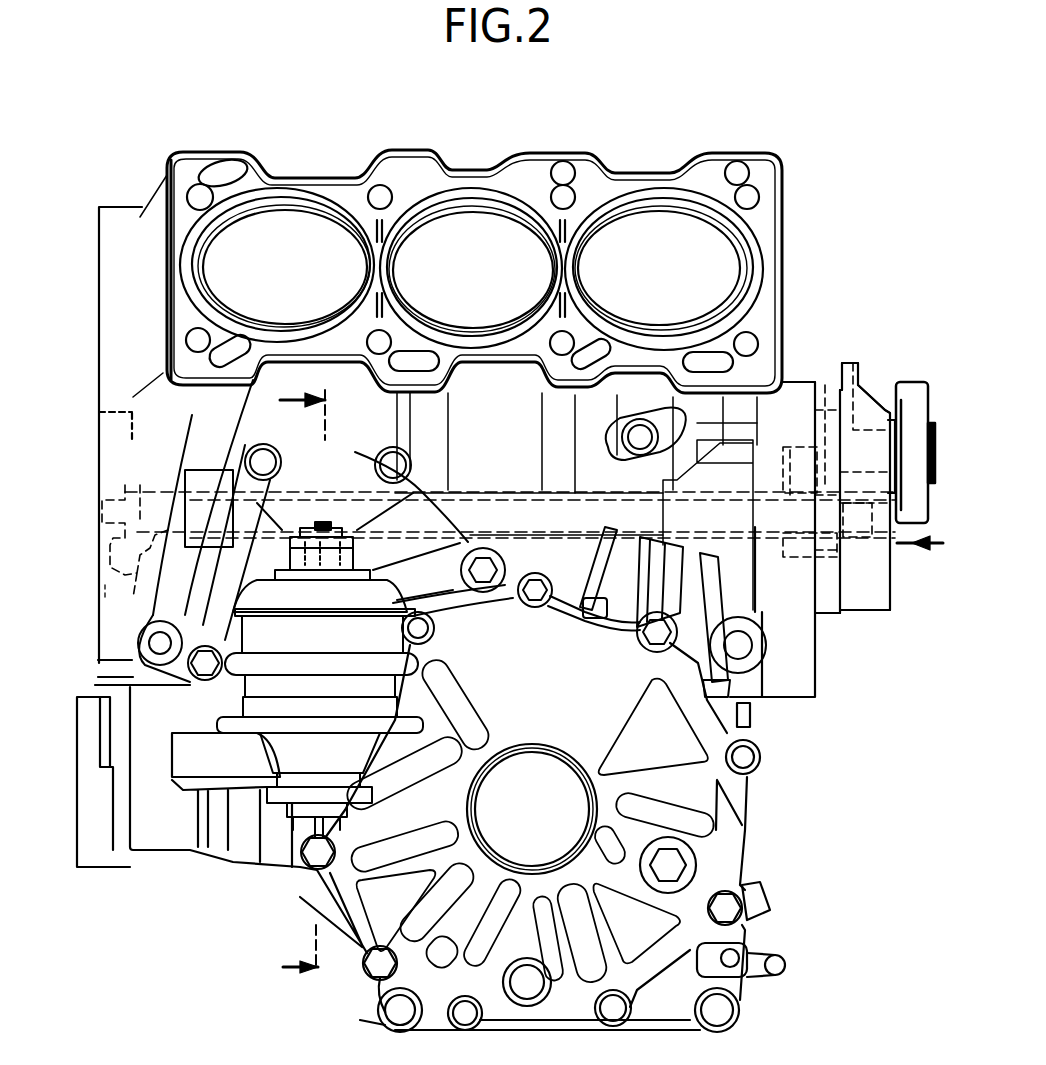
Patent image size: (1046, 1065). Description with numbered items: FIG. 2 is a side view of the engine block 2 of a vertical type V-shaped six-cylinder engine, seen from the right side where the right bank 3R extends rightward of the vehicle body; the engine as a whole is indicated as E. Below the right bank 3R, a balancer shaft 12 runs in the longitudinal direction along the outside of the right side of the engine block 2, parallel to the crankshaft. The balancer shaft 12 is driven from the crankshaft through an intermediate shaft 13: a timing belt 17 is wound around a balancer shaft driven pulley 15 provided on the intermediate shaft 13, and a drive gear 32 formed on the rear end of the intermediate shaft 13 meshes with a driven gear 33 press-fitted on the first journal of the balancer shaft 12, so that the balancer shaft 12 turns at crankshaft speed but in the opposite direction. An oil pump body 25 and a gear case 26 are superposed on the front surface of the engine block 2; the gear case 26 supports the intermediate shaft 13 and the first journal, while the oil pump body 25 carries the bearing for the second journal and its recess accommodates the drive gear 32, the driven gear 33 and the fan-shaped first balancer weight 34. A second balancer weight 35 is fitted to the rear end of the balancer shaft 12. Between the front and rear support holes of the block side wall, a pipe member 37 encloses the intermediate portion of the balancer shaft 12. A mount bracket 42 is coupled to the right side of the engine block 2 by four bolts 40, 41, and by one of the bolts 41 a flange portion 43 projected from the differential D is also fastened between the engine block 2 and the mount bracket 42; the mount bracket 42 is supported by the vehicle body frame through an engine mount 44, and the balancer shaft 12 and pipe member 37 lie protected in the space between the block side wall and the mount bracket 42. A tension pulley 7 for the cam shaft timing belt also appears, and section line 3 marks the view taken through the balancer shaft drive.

The engine block 2 is at (100, 292).
The right bank 3R is at (410, 151).
The engine E is at (516, 162).
The balancer shaft 12 is at (467, 490).
The intermediate shaft 13 is at (850, 363).
The balancer shaft driven pulley 15 is at (890, 388).
The timing belt 17 is at (910, 382).
The oil pump body 25 is at (823, 605).
The gear case 26 is at (870, 597).
The drive gear 32 is at (827, 387).
The driven gear 33 is at (842, 560).
The first balancer weight 34 is at (783, 467).
The second balancer weight 35 is at (140, 573).
The pipe member 37 is at (549, 581).
The bolts 40 is at (263, 462).
The bolt 41 is at (200, 670).
The mount bracket 42 is at (350, 452).
The flange portion 43 is at (190, 643).
The engine mount 44 is at (407, 700).
The section line 3- 3 is at (920, 568).
The tension pulley 7 is at (316, 698).
The differential D is at (757, 825).